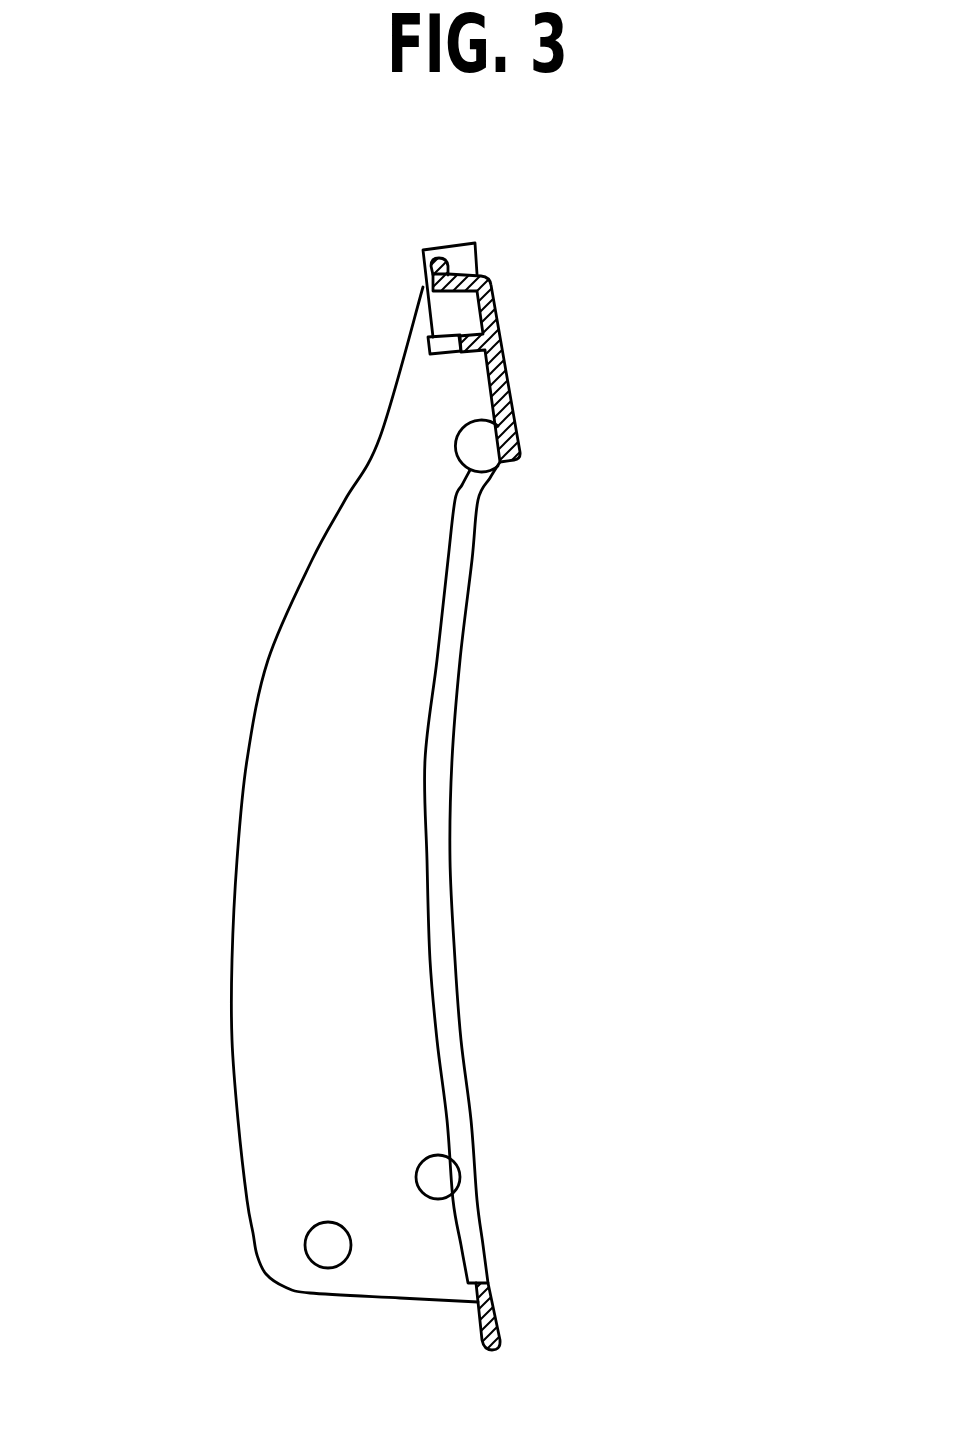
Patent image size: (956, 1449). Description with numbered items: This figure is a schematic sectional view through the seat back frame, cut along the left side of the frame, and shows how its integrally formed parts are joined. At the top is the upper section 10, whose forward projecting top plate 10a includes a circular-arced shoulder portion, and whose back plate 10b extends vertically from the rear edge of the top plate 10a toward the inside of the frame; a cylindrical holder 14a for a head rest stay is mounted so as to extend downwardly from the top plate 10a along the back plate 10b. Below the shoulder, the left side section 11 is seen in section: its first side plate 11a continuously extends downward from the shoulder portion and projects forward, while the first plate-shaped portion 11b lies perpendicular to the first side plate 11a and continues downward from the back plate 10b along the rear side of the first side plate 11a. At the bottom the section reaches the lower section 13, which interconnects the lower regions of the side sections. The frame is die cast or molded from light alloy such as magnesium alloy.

The upper section 10 is at (560, 307).
The top plate 10a is at (450, 288).
The back plate 10b is at (470, 472).
The left side section 11 is at (278, 545).
The first side plate 11a is at (302, 808).
The first plate-shaped portion 11b is at (435, 803).
The lower section 13 is at (497, 1310).
The cylindrical holder 14a is at (460, 247).